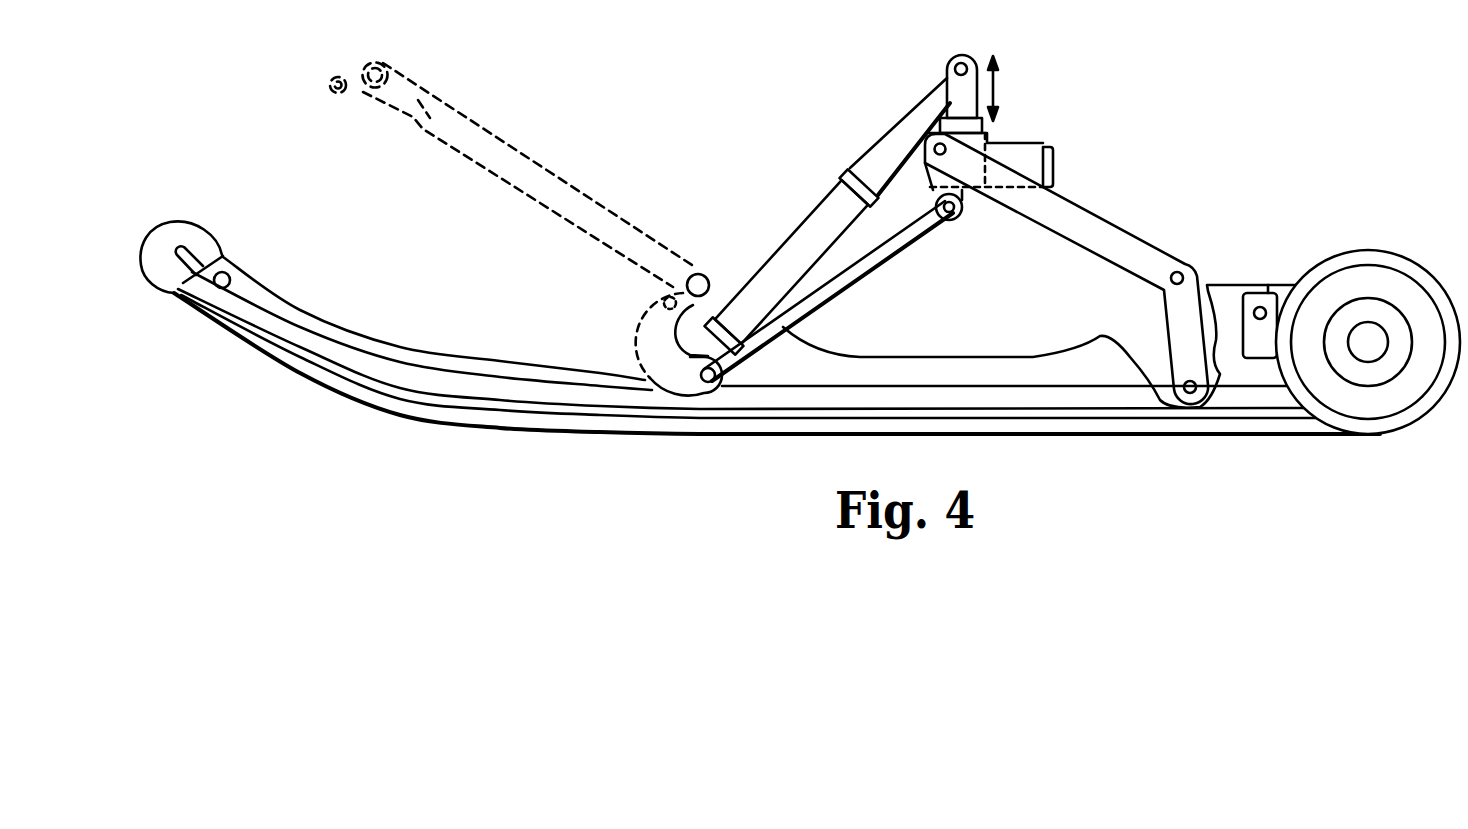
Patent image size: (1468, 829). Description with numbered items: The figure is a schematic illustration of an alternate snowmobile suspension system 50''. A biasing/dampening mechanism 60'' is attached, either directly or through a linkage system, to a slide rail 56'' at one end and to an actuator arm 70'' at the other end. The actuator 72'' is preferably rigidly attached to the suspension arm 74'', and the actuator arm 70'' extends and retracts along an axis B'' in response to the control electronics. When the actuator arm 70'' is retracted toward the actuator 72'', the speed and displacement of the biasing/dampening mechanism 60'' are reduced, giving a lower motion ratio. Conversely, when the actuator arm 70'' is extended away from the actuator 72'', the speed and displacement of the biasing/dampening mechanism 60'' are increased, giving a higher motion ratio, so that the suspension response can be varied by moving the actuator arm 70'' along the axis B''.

The snowmobile suspension system 50'' is at (800, 246).
The slide rail 56'' is at (760, 350).
The biasing/dampening mechanism 60'' is at (828, 216).
The actuator arm 70'' is at (921, 94).
The actuator 72'' is at (1030, 153).
The suspension arm 74'' is at (1066, 269).
The axis B'' is at (1029, 88).